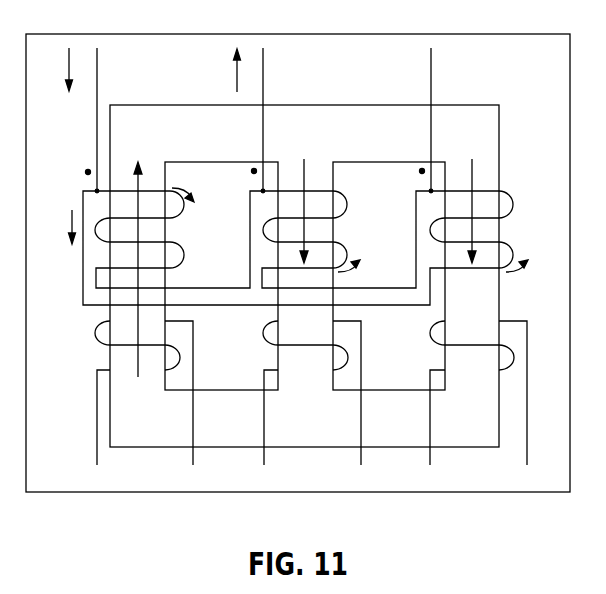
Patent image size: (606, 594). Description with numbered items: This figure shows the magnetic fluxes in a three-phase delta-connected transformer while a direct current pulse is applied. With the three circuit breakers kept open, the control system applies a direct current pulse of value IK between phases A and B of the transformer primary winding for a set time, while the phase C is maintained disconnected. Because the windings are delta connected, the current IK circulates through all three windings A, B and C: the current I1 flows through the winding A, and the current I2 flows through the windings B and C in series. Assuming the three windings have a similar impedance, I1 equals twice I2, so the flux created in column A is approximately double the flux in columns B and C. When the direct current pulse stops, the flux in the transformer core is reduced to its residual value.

The phase A winding A is at (106, 120).
The phase B winding B is at (272, 120).
The phase C winding C is at (439, 120).
The direct current pulse IK is at (144, 70).
The current in winding A I1 is at (189, 189).
The current in windings B and C I2 is at (297, 241).